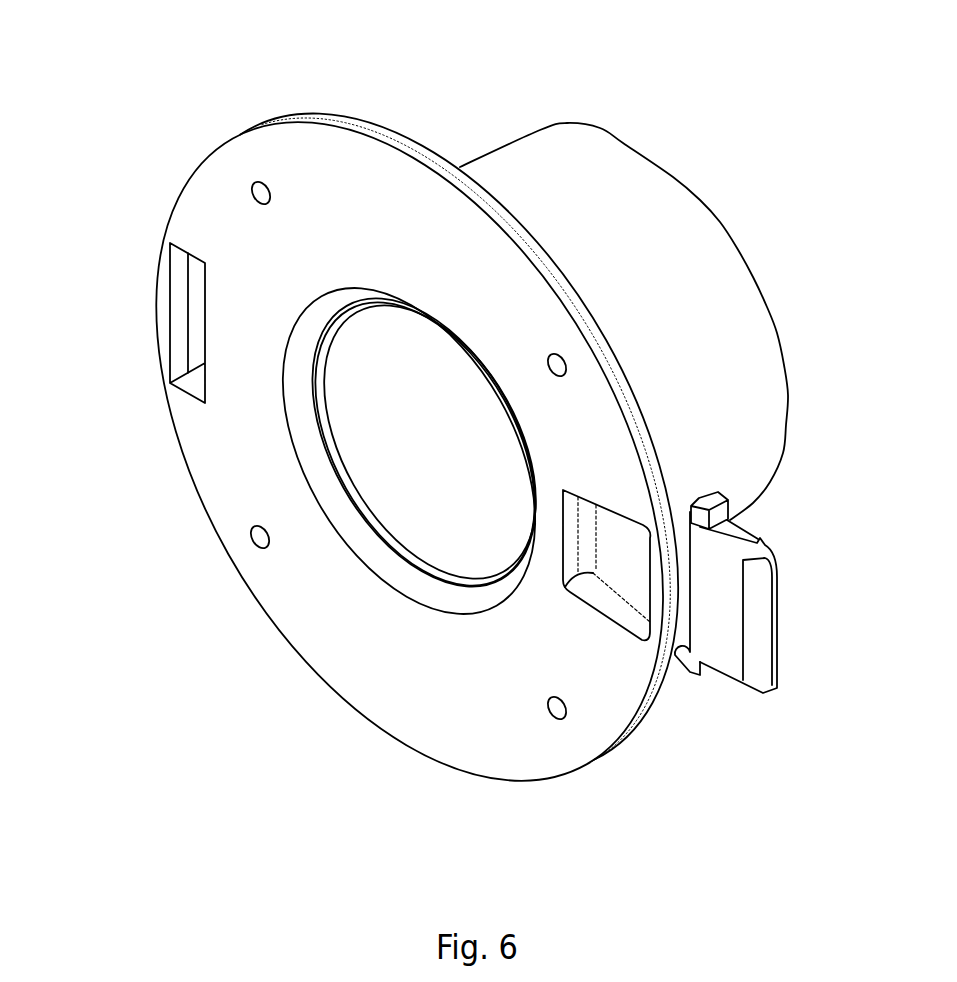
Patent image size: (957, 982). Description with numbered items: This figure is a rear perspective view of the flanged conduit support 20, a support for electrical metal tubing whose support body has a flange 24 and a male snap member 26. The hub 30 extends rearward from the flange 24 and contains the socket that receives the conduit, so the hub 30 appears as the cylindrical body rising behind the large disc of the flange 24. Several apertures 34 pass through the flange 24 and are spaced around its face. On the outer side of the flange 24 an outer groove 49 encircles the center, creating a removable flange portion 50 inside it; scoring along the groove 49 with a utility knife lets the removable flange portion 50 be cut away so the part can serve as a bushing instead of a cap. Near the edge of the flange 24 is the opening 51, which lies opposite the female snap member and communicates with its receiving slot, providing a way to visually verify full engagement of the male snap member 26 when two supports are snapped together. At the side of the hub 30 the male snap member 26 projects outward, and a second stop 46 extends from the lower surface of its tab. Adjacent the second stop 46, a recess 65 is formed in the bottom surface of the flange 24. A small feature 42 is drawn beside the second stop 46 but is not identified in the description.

The flanged conduit support 20 is at (164, 144).
The flange 24 is at (383, 241).
The hub 30 is at (660, 299).
The apertures 34 is at (259, 184).
The outer groove 49 is at (393, 557).
The removable flange portion 50 is at (407, 459).
The opening 51 is at (200, 312).
The recess 65 is at (633, 570).
The stop block 42 is at (705, 503).
The male snap member 26 is at (740, 517).
The second stop 46 is at (660, 592).